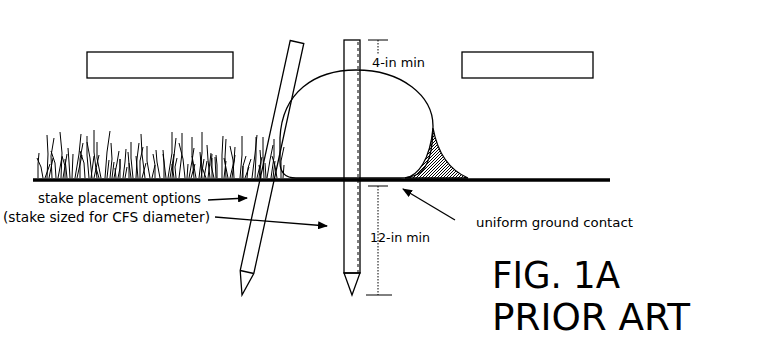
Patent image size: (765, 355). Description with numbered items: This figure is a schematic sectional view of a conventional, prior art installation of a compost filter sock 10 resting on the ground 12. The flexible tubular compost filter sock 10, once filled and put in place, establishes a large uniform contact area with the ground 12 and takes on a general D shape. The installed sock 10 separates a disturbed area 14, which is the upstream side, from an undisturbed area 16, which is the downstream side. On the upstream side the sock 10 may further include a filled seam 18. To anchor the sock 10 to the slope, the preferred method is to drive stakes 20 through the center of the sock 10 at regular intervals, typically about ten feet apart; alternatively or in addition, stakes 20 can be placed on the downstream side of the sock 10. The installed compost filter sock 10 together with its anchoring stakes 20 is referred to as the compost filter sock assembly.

The compost filter sock 10 is at (428, 88).
The ground 12 is at (602, 184).
The disturbed area 14 is at (595, 60).
The undisturbed area 16 is at (133, 78).
The filled seam 18 is at (466, 152).
The stakes 20 is at (344, 52).